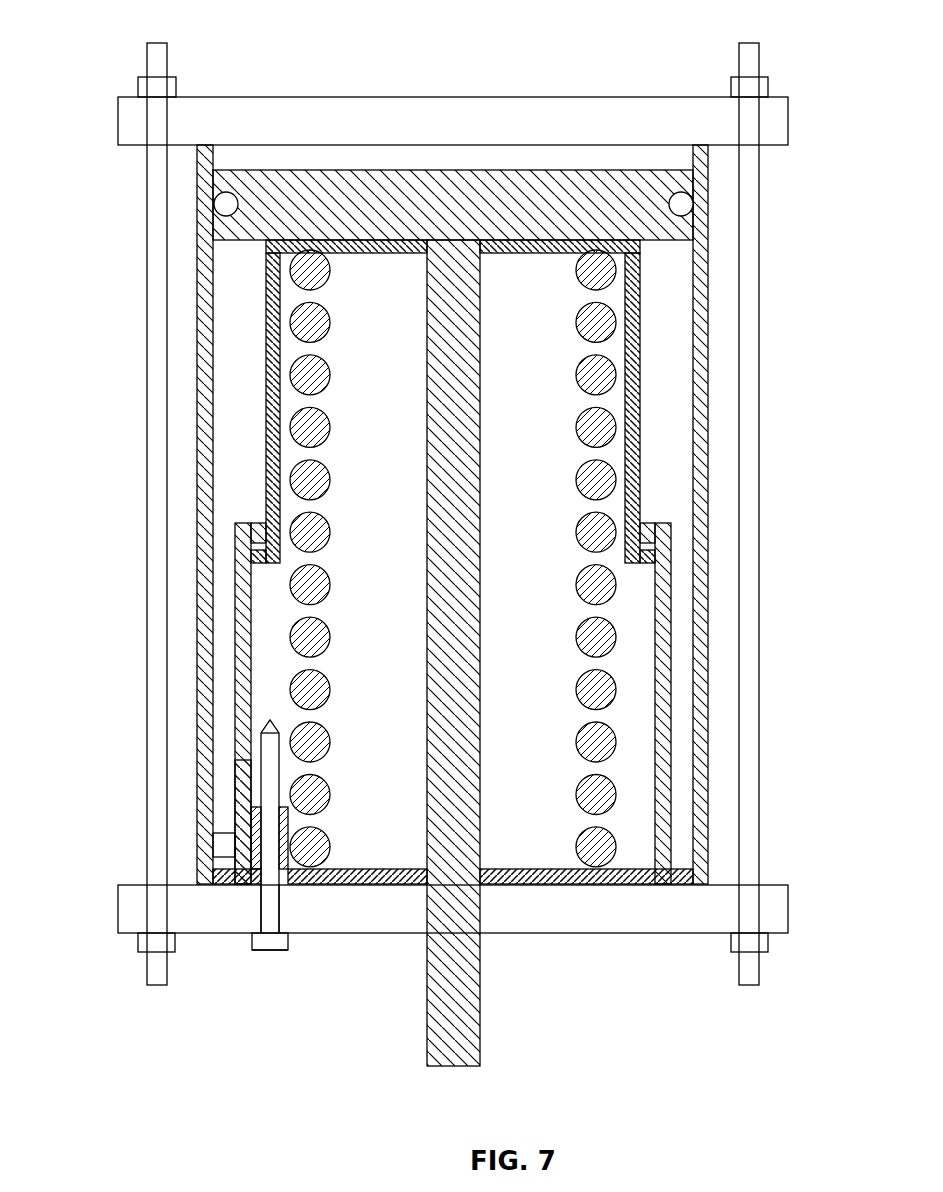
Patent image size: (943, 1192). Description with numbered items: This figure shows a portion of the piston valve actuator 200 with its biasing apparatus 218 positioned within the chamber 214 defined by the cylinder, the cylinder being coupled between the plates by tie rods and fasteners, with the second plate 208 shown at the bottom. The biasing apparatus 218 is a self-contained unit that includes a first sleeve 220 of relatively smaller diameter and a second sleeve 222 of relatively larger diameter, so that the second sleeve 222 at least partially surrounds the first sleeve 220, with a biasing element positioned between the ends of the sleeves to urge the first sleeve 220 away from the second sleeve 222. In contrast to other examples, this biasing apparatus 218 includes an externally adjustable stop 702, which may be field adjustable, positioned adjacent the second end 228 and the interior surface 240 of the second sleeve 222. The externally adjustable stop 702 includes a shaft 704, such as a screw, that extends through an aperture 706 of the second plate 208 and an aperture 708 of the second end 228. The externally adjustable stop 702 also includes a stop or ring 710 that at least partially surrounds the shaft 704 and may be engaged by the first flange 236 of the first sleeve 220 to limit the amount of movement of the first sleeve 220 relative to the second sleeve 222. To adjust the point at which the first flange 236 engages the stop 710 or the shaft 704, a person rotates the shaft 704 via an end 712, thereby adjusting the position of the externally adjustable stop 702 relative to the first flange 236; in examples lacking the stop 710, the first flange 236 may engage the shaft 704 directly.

The actuator 200 is at (807, 53).
The second plate 208 is at (502, 920).
The chamber 214 is at (237, 296).
The biasing apparatus 218 is at (663, 328).
The first sleeve 220 is at (632, 465).
The second sleeve 222 is at (662, 635).
The second end 228 is at (565, 877).
The first flange 236 is at (260, 553).
The interior surface 240 is at (253, 752).
The externally adjustable stop 702 is at (240, 782).
The shaft 704 is at (288, 938).
The aperture 706 is at (262, 910).
The aperture 708 is at (255, 878).
The stop or ring 710 is at (284, 827).
The end 712 is at (273, 950).